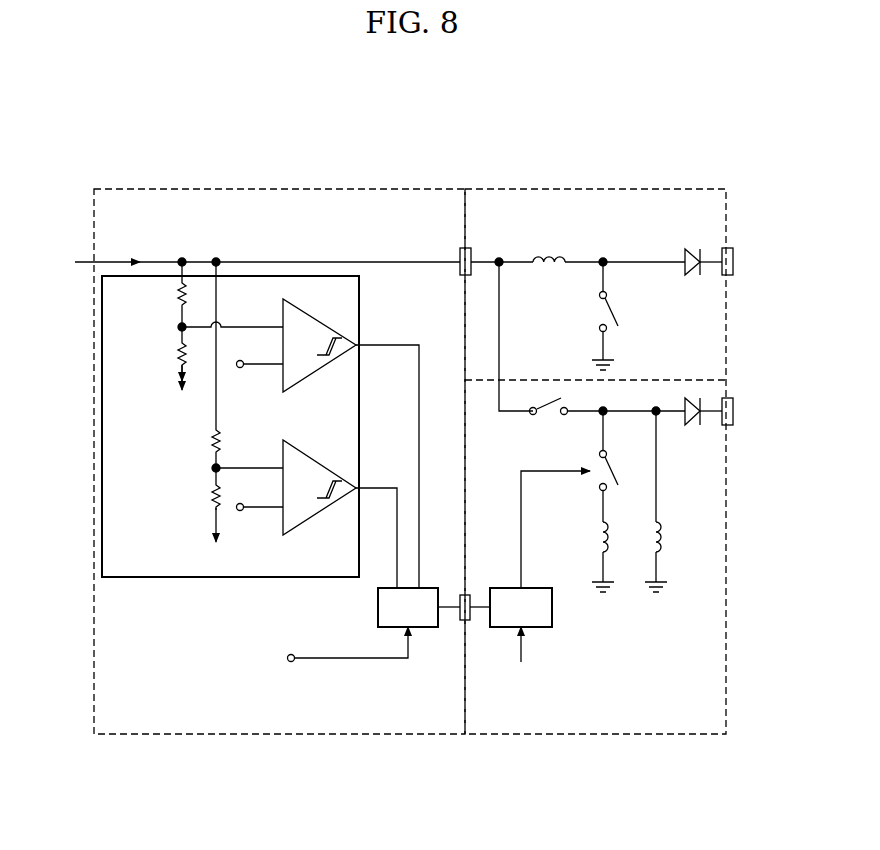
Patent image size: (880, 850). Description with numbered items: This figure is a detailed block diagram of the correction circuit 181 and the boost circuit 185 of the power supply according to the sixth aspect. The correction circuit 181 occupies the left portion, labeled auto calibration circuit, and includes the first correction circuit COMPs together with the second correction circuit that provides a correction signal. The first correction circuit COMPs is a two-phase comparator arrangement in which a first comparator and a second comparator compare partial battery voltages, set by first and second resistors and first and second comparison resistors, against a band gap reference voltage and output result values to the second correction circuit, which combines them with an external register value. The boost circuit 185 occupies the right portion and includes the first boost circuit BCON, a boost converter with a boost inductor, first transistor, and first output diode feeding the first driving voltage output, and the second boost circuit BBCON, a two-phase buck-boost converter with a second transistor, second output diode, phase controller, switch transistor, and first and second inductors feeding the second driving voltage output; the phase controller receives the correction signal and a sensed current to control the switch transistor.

The correction circuit 181 is at (333, 189).
The boost circuit 185 is at (527, 189).
The first correction circuit COMPs is at (238, 276).
The first boost circuit BCON is at (618, 189).
The second boost circuit BBCON is at (603, 735).